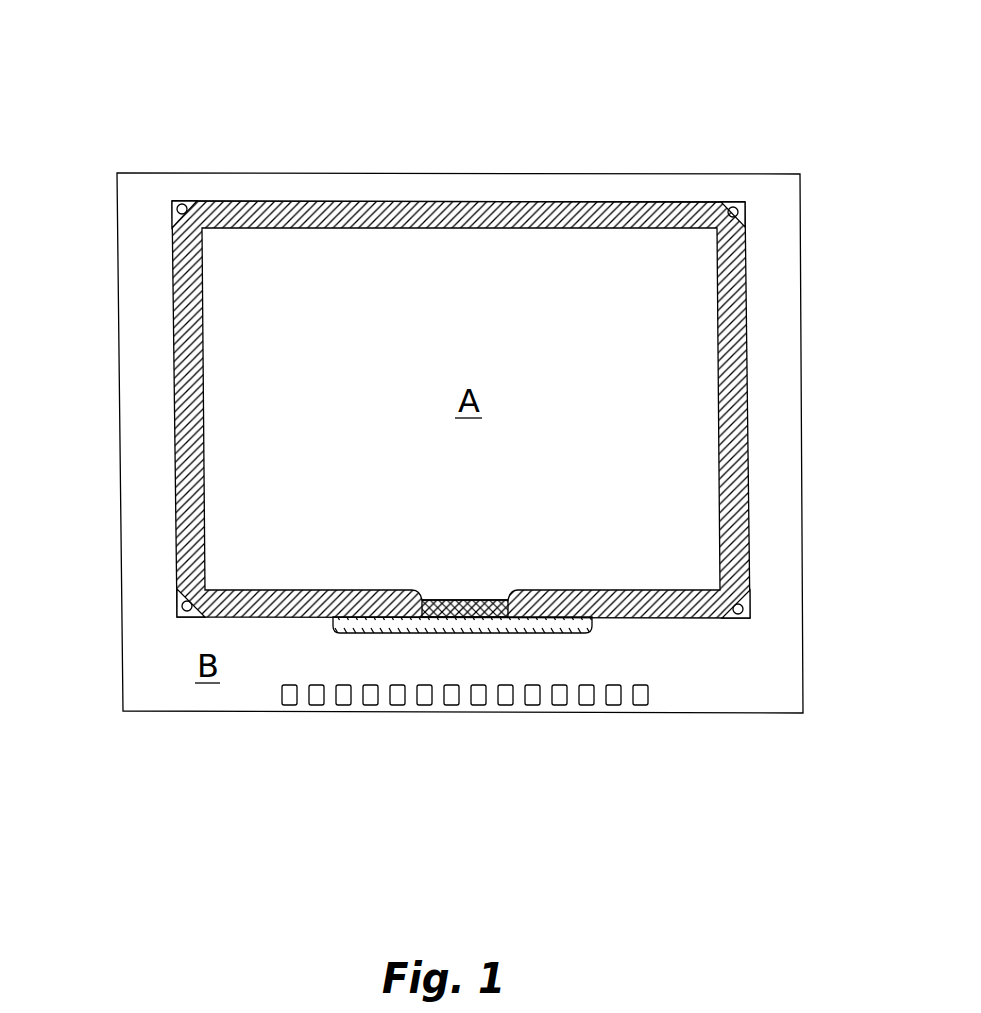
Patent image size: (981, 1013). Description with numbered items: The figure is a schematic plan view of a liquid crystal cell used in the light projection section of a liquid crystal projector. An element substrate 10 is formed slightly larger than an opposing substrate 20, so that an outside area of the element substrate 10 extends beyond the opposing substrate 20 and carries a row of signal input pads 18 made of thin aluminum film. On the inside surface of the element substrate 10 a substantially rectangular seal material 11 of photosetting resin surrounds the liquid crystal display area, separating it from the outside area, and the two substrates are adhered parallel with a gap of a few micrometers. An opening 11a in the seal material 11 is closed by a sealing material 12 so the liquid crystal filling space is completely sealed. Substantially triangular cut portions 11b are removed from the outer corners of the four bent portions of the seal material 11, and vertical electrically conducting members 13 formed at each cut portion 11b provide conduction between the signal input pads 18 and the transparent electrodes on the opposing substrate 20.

The element substrate 10 is at (220, 712).
The seal material 11 is at (550, 204).
The opening 11a is at (466, 608).
The cut portions 11b is at (742, 222).
The sealing material 12 is at (527, 632).
The vertical electrically conducting members 13 is at (182, 204).
The signal input pads 18 is at (367, 705).
The opposing substrate 20 is at (350, 202).